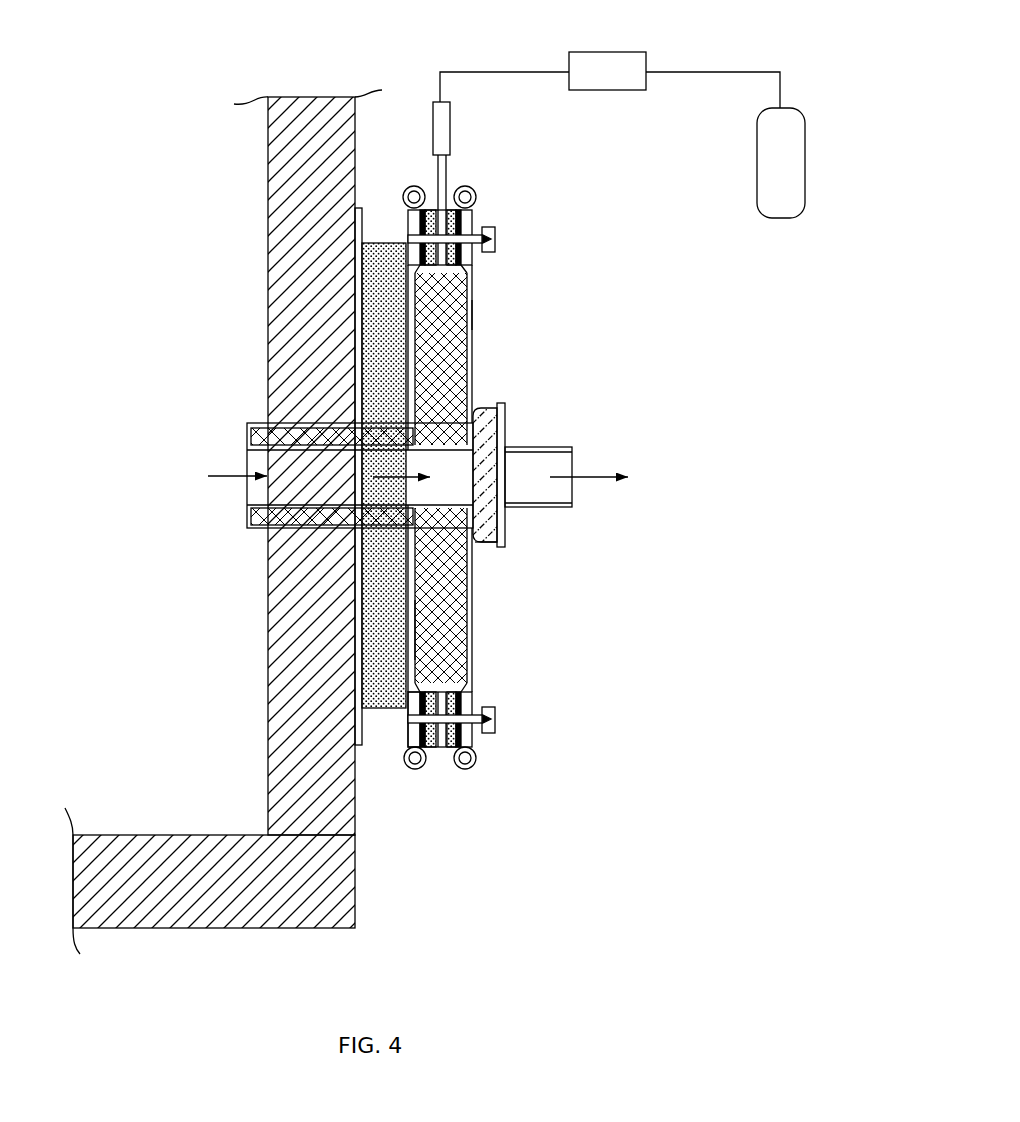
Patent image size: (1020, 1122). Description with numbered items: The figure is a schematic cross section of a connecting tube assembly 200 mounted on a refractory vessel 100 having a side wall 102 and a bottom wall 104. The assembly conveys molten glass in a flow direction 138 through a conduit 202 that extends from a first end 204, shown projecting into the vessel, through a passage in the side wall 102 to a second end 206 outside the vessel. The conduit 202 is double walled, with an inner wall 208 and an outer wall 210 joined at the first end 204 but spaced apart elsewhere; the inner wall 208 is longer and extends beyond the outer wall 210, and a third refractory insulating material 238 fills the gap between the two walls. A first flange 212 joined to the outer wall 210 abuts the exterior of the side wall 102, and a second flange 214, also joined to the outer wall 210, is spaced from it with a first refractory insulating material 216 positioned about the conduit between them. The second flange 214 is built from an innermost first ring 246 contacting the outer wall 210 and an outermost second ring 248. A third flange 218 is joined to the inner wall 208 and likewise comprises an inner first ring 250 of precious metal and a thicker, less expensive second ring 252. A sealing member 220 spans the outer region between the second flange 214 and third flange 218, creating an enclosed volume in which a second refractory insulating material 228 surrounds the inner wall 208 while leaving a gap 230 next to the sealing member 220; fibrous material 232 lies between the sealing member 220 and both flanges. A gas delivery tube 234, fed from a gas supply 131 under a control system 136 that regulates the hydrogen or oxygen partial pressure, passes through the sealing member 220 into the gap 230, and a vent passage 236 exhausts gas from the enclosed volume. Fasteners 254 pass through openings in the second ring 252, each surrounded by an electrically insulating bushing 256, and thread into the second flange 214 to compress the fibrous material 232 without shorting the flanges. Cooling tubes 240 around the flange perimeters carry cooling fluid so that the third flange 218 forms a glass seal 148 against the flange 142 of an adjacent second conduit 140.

The refractory vessel 100 is at (223, 528).
The side wall 102 is at (268, 211).
The bottom wall 104 is at (247, 928).
The gas supply 131 is at (757, 136).
The control system 136 is at (621, 90).
The flow direction 138 is at (227, 481).
The second conduit 140 is at (547, 512).
The flange 142 is at (507, 420).
The glass seal 148 is at (491, 543).
The connecting tube assembly 200 is at (421, 502).
The conduit 202 is at (290, 478).
The first end 204 is at (247, 465).
The second end 206 is at (498, 467).
The inner wall 208 is at (441, 405).
The outer wall 210 is at (257, 423).
The first flange 212 is at (360, 745).
The second flange 214 is at (462, 648).
The first refractory insulating material 216 is at (376, 243).
The third flange 218 is at (474, 617).
The sealing member 220 is at (441, 748).
The second refractory insulating material 228 is at (448, 340).
The gap 230 is at (444, 684).
The fibrous material 232 is at (456, 266).
The gas delivery tube 234 is at (449, 163).
The vent passage 236 is at (436, 748).
The third refractory insulating material 238 is at (262, 526).
The cooling tube 240 is at (414, 186).
The first ring 246 is at (463, 596).
The second ring 248 is at (413, 740).
The first ring 250 is at (473, 315).
The second ring 252 is at (473, 217).
The fastener 254 is at (497, 249).
The electrically insulating bushing 256 is at (463, 258).